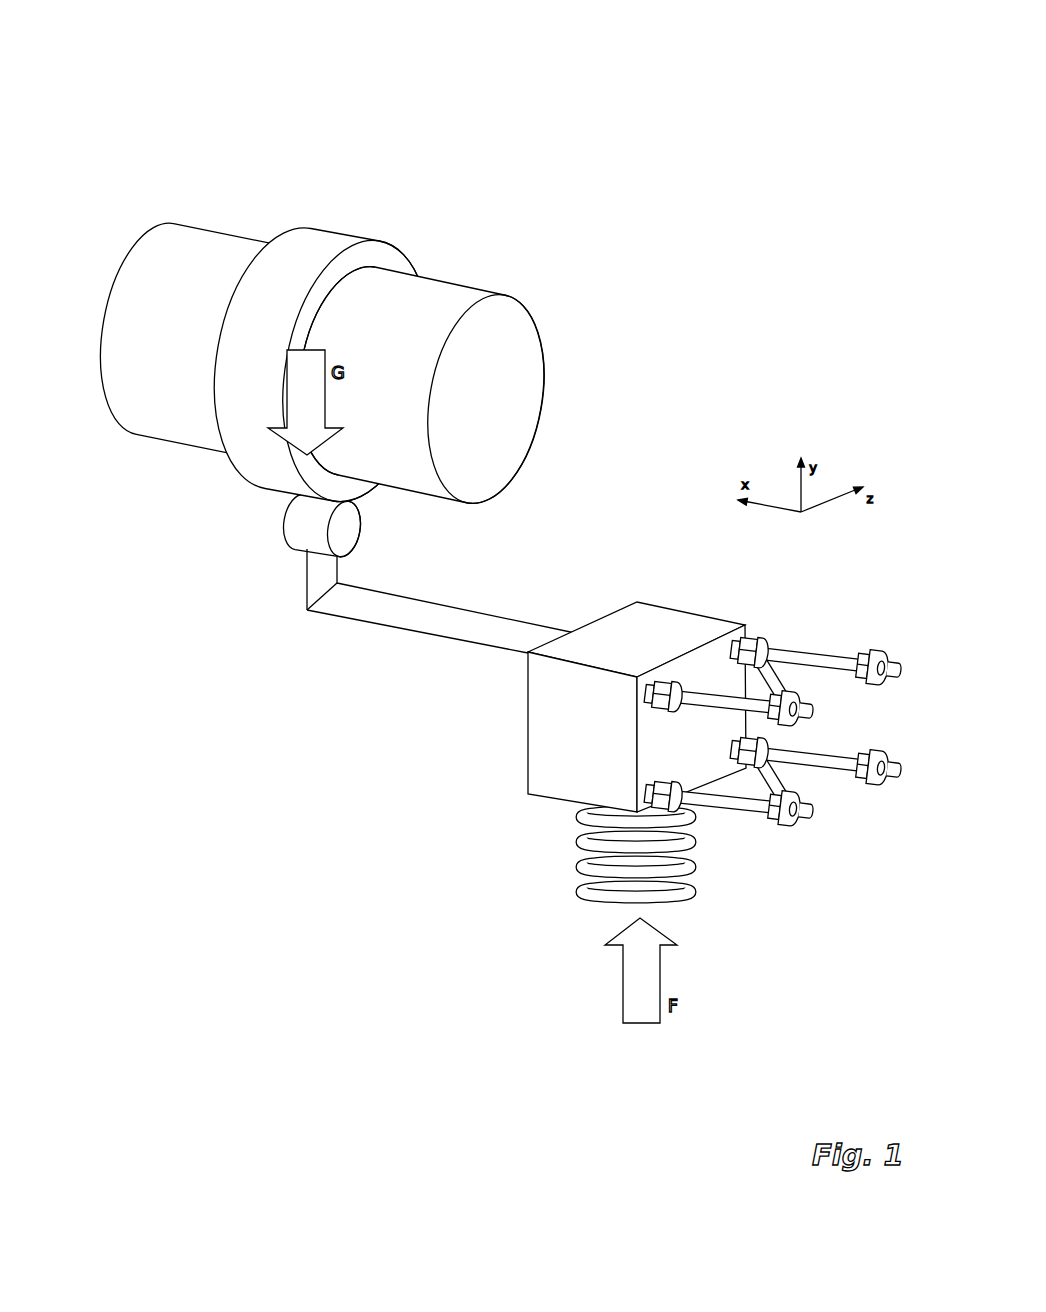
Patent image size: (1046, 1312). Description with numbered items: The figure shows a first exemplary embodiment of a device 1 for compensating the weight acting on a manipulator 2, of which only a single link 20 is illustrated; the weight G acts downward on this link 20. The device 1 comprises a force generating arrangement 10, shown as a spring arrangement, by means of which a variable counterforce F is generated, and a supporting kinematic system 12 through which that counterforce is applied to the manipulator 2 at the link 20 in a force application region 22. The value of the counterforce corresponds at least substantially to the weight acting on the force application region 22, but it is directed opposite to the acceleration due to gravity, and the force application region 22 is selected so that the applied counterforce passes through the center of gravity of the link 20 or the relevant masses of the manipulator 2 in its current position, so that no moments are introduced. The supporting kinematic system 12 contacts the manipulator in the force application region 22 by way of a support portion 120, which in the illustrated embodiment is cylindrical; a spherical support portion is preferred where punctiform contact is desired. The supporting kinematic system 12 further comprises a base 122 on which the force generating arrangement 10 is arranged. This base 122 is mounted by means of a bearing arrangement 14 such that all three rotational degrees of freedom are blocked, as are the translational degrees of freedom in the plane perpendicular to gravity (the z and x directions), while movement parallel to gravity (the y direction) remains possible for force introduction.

The device 1 is at (401, 870).
The manipulator 2 is at (165, 116).
The force generating arrangement 10 is at (600, 922).
The supporting kinematic system 12 is at (391, 664).
The bearing arrangement 14 is at (801, 860).
The link 20 is at (156, 256).
The force application region 22 is at (302, 503).
The support portion 120 is at (318, 515).
The base 122 is at (667, 625).